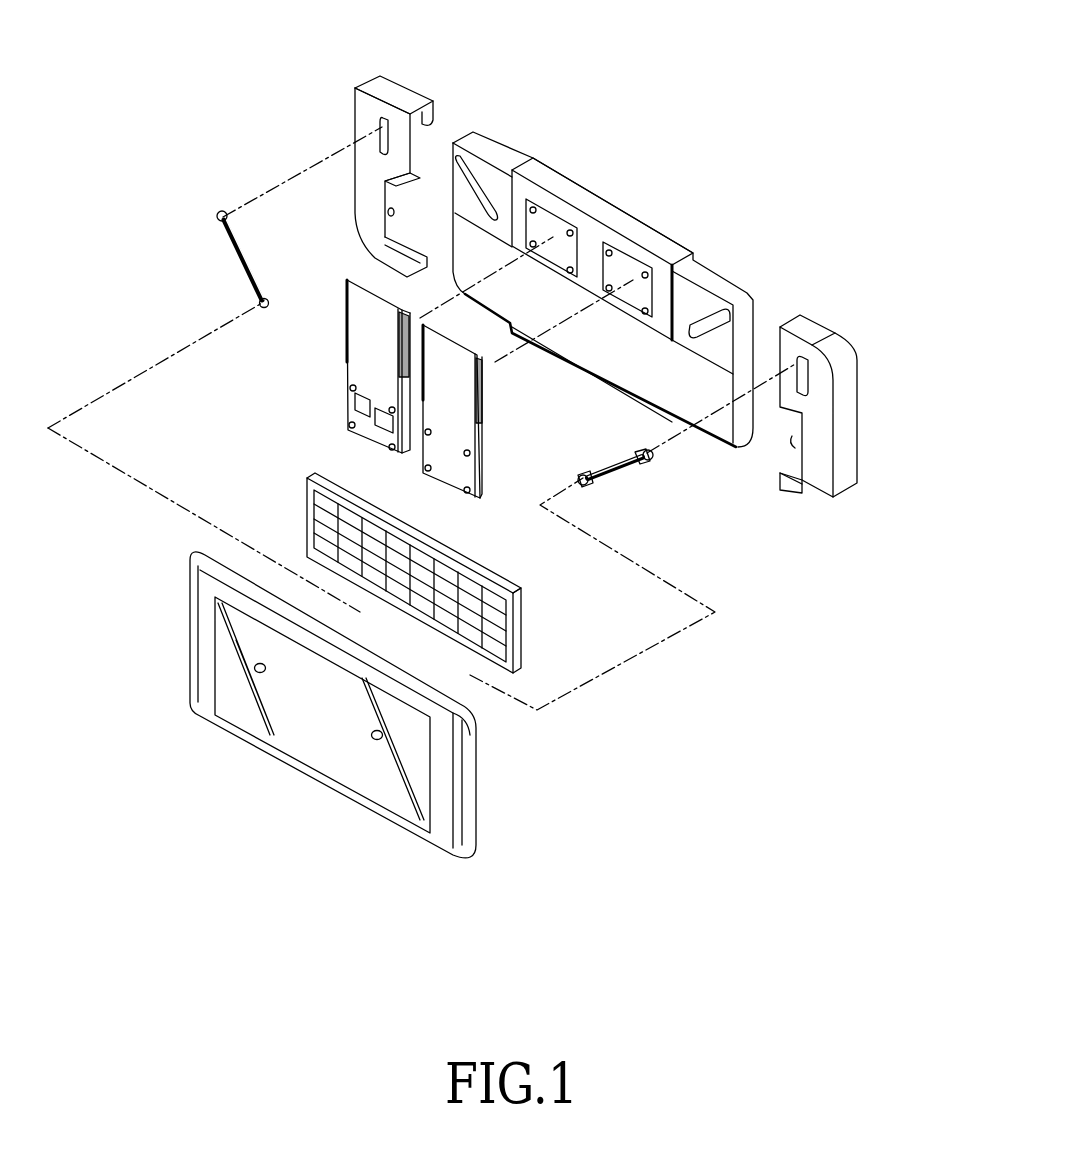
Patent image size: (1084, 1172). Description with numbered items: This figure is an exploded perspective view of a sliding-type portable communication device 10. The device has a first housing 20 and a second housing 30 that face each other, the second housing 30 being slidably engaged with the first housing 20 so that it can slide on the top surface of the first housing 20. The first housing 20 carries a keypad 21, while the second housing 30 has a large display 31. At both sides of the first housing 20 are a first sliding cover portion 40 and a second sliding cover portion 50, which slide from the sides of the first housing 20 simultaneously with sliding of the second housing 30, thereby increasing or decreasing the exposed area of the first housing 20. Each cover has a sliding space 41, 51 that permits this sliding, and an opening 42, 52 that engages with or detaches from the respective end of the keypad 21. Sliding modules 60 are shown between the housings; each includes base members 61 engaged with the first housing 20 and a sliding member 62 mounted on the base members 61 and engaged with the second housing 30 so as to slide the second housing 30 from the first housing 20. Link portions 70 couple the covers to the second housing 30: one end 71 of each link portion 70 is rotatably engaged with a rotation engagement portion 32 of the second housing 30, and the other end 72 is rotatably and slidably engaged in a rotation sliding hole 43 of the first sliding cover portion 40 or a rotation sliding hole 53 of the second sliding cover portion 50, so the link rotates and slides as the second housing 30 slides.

The sliding-type portable communication device 10 is at (773, 140).
The first housing 20 is at (600, 209).
The keypad 21 is at (520, 620).
The second housing 30 is at (366, 705).
The display 31 is at (330, 764).
The rotation engagement portion 32 is at (257, 672).
The first sliding cover portion 40 is at (322, 143).
The sliding space 41 is at (428, 118).
The opening 42 is at (389, 212).
The rotation sliding hole 43 is at (379, 128).
The second sliding cover portion 50 is at (860, 401).
The sliding space 51 is at (777, 342).
The opening 52 is at (845, 446).
The rotation sliding hole 53 is at (806, 386).
The sliding module 60 is at (475, 389).
The base member 61 is at (482, 394).
The sliding member 62 is at (464, 442).
The link portion 70 is at (427, 371).
The one end of link portion 71 is at (259, 303).
The other end of link portion 72 is at (218, 216).